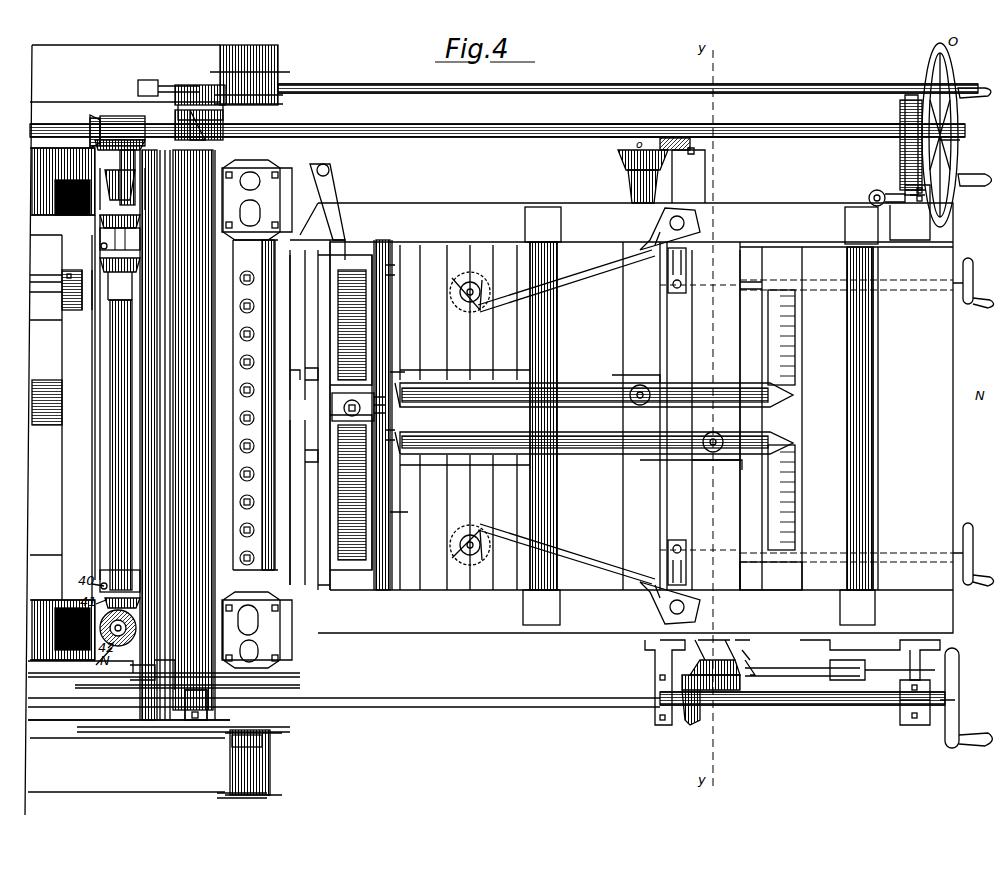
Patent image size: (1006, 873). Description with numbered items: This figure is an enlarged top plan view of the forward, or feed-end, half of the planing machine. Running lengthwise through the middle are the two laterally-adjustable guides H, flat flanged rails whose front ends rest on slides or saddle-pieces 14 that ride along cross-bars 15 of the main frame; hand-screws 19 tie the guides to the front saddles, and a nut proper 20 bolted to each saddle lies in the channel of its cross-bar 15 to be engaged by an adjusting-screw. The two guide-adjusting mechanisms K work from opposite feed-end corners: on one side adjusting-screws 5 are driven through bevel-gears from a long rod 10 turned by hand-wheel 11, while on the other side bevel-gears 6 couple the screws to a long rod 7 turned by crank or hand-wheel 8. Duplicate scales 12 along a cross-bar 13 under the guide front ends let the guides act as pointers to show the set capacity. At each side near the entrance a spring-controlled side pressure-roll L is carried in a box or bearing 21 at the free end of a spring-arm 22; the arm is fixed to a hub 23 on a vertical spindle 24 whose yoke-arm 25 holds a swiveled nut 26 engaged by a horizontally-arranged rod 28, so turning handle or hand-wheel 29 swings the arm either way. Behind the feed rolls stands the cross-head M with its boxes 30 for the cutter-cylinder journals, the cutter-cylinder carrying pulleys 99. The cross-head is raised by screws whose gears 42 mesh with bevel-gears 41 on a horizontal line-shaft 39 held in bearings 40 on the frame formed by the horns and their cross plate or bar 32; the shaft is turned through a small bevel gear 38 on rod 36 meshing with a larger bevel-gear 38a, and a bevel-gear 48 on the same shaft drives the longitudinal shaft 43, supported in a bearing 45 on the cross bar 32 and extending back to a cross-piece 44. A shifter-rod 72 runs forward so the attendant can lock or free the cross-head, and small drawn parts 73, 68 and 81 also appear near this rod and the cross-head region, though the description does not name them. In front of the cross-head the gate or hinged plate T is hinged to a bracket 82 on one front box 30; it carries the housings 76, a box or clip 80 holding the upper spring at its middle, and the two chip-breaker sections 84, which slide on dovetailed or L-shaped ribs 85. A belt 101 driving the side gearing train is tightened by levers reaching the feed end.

The pulleys on the cutter-cylinder 99 is at (278, 42).
The shifter-rod 72 is at (660, 92).
The bracket 73 is at (160, 88).
The long rod 10 is at (50, 127).
The rod 36 is at (745, 132).
The small miter or bevel gear 38 is at (95, 115).
The bevel-gear 38a is at (120, 124).
The bearing 68 is at (185, 140).
The gears of the adjusting-screws 42 is at (118, 185).
The bevel-gears 41 is at (110, 222).
The bearings 40 is at (104, 246).
The bevel-gear 48 is at (138, 270).
The bearing 45 is at (65, 280).
The horizontally and longitudinally disposed shaft 43 is at (46, 292).
The cross-piece 44 is at (96, 310).
The horizontal line-shaft 39 is at (120, 408).
The cross plate or bar 32 is at (135, 478).
The boxes 30 is at (157, 435).
The bracket 82 is at (283, 372).
The guide rail 81 is at (296, 325).
The chip-breaker sections 84 is at (296, 502).
The dovetailed or L-shaped ribs 85 is at (310, 374).
The gate or hinged plate T is at (290, 540).
The frame or housings 76 is at (351, 412).
The box or clip 80 is at (358, 407).
The laterally-adjustable guides H is at (588, 470).
The hand-screws 19 is at (723, 440).
The slides or saddle-pieces 14 is at (677, 415).
The cross-bars 15 is at (694, 420).
The boxes or bearings 21 is at (466, 565).
The spring-arms 22 is at (566, 417).
The hub 23 is at (649, 416).
The vertical spindle 24 is at (705, 607).
The yoke-arm 25 is at (688, 272).
The nut 26 is at (688, 565).
The scales 12 is at (812, 476).
The horizontally-arranged rod 28 is at (846, 421).
The cross-bar 13 is at (771, 576).
The hand-wheel 11 is at (960, 110).
The guide-adjusting mechanisms K is at (962, 417).
The nut proper 20 is at (975, 283).
The handle or hand-wheel 29 is at (975, 553).
The crank or hand-wheel 8 is at (960, 650).
The long rod 7 is at (548, 708).
The bevel-gears 6 is at (720, 705).
The adjusting-screws 5 is at (108, 624).
The belt 101 is at (129, 712).
The cross-head M is at (165, 680).
The spring-controlled side pressure-rolls L is at (422, 416).